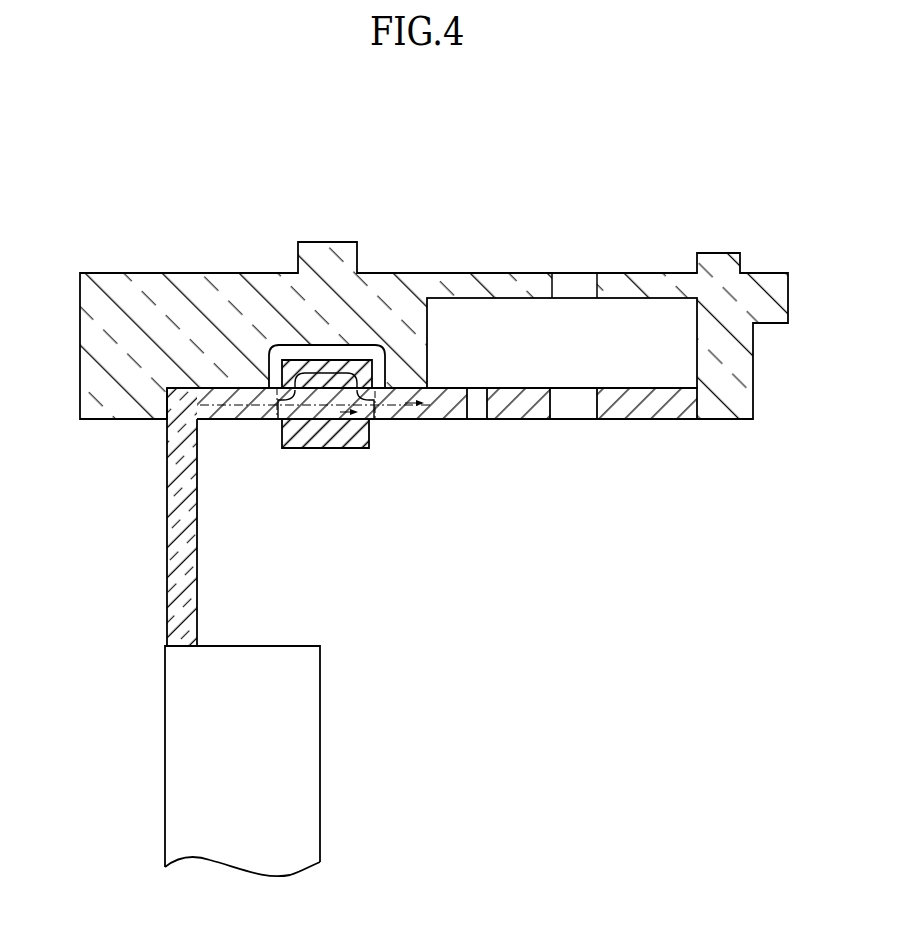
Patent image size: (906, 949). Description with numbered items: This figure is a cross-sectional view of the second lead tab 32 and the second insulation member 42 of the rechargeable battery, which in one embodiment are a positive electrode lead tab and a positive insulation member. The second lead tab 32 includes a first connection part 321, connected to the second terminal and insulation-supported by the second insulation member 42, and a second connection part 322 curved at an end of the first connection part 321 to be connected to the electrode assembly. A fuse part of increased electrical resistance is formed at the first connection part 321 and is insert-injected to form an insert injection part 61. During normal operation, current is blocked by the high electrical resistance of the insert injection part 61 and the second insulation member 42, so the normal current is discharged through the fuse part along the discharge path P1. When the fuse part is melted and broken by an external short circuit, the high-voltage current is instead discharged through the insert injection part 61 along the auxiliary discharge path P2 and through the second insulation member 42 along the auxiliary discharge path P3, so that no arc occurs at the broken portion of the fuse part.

The second insulation member 42 is at (717, 292).
The second lead tab 32 is at (152, 553).
The first connection part 321 is at (648, 405).
The second connection part 322 is at (308, 733).
The insert injection part 61 is at (368, 442).
The discharge path P1 is at (330, 422).
The auxiliary discharge path P2 is at (277, 422).
The auxiliary discharge path P3 is at (280, 384).